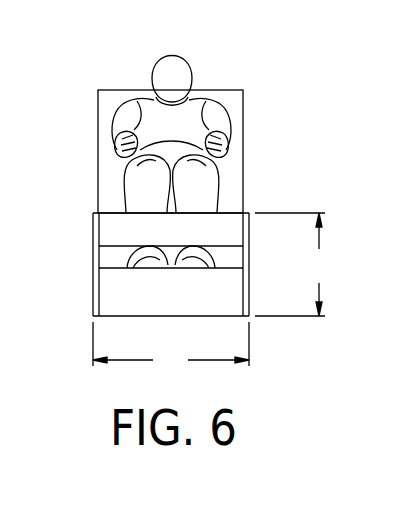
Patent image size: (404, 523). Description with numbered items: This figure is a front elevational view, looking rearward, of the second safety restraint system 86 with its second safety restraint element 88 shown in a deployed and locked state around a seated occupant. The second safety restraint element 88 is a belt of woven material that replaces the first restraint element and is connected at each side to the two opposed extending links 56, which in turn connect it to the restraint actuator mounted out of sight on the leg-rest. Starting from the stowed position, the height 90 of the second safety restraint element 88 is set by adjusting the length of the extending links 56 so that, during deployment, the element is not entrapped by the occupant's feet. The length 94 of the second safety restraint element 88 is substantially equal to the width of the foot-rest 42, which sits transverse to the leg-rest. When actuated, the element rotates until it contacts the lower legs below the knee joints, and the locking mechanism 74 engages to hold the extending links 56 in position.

The second safety restraint system 86 is at (256, 70).
The second safety restraint element 88 is at (215, 227).
The locking mechanism 74 is at (98, 213).
The extending links 56 is at (93, 280).
The foot-rest 42 is at (177, 303).
The height 90 is at (293, 264).
The length 94 is at (171, 347).